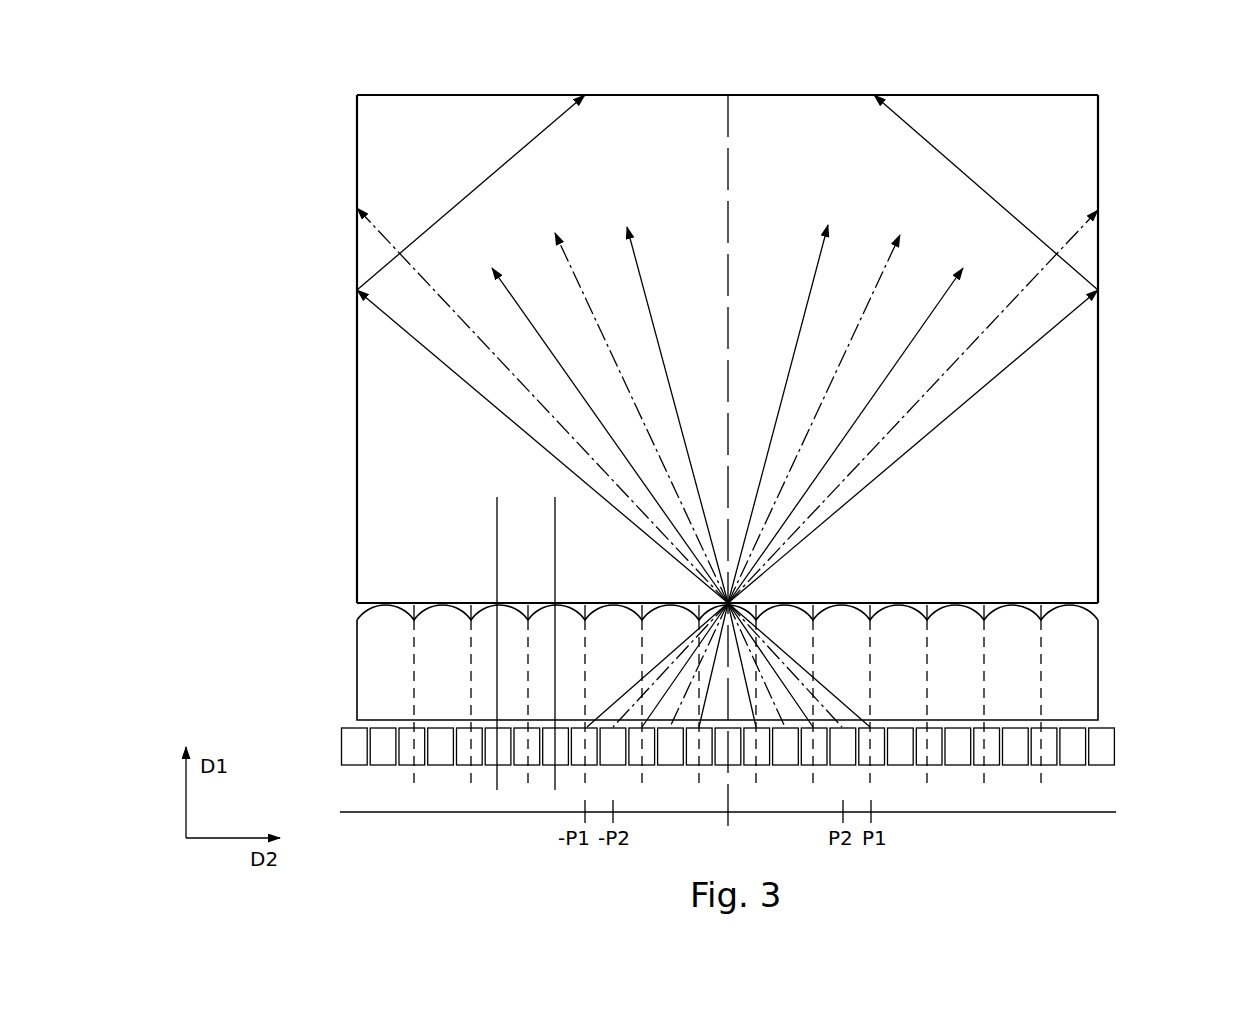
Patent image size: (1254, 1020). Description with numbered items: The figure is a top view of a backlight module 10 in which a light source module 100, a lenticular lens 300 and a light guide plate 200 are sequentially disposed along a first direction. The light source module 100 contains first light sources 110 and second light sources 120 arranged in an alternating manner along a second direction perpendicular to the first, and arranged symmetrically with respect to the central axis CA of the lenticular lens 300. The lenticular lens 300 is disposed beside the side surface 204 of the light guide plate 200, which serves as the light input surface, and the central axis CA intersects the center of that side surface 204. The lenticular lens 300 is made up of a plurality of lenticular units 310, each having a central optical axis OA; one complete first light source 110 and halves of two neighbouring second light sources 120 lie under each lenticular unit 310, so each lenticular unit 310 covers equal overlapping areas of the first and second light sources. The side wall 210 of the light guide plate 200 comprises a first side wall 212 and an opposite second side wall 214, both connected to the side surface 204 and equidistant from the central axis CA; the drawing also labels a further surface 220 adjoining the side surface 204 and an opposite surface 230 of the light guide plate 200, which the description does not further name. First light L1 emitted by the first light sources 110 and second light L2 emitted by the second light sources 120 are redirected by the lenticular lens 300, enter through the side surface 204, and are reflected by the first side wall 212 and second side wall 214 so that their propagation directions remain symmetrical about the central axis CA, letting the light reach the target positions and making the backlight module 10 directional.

The backlight module 10 is at (127, 81).
The light source module 100 is at (1116, 746).
The first light source 110 is at (1013, 765).
The second light source 120 is at (980, 765).
The light guide plate 200 is at (1050, 393).
The side surface 204 is at (410, 605).
The side wall 210 is at (170, 633).
The first side wall 212 is at (357, 241).
The second side wall 214 is at (1098, 246).
The bottom surface 220 is at (1075, 593).
The light exit surface 230 is at (1070, 148).
The lenticular lens 300 is at (1068, 678).
The lenticular unit 310 is at (948, 617).
The central axis CA is at (729, 110).
The central optical axis OA is at (497, 511).
The first light L1 is at (508, 366).
The second light L2 is at (425, 351).